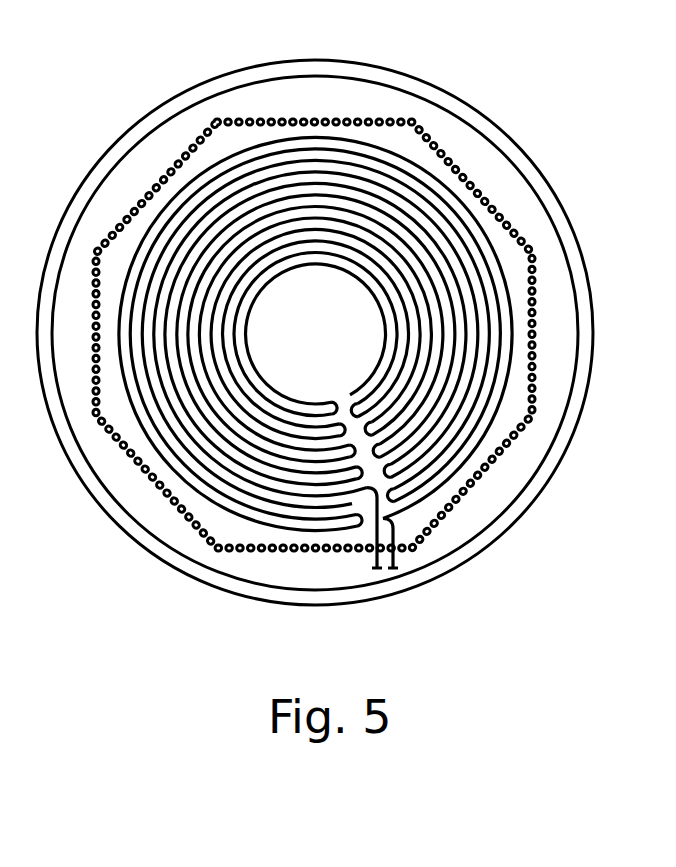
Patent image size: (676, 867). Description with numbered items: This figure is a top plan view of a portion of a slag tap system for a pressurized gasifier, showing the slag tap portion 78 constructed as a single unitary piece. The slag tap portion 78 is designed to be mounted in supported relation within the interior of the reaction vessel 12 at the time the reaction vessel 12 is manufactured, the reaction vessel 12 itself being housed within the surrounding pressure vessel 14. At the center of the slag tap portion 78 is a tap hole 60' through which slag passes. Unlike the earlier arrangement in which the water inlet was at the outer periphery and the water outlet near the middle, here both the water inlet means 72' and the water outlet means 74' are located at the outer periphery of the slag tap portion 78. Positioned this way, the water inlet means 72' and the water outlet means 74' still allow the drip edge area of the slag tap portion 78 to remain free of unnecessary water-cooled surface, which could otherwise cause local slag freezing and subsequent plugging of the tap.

The pressure vessel 14 is at (583, 235).
The reaction vessel 12 is at (505, 193).
The slag tap portion 78 is at (405, 158).
The tap hole 60' is at (316, 334).
The water inlet means 72' is at (435, 567).
The water outlet means 74' is at (335, 577).